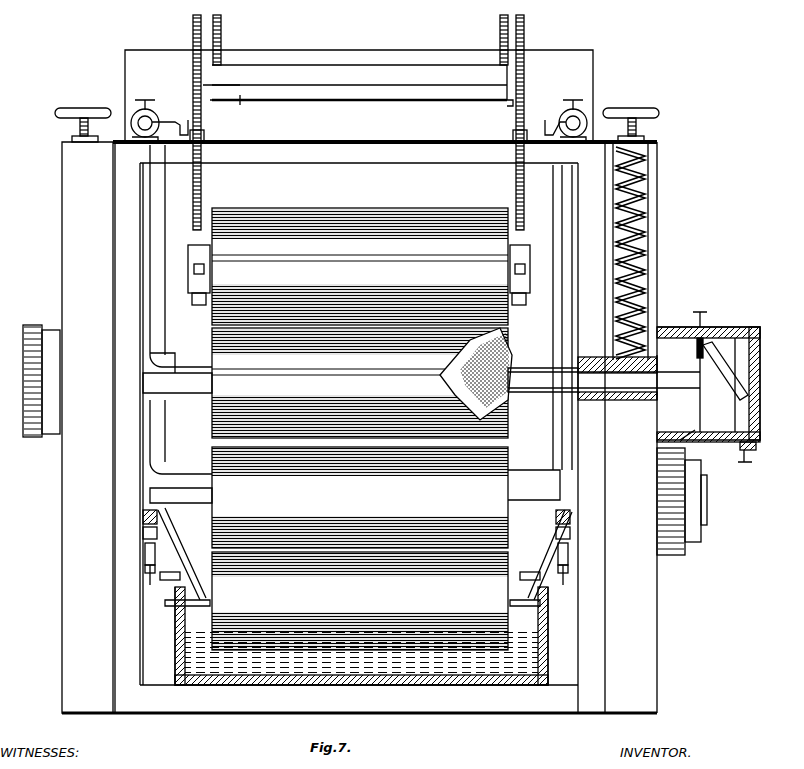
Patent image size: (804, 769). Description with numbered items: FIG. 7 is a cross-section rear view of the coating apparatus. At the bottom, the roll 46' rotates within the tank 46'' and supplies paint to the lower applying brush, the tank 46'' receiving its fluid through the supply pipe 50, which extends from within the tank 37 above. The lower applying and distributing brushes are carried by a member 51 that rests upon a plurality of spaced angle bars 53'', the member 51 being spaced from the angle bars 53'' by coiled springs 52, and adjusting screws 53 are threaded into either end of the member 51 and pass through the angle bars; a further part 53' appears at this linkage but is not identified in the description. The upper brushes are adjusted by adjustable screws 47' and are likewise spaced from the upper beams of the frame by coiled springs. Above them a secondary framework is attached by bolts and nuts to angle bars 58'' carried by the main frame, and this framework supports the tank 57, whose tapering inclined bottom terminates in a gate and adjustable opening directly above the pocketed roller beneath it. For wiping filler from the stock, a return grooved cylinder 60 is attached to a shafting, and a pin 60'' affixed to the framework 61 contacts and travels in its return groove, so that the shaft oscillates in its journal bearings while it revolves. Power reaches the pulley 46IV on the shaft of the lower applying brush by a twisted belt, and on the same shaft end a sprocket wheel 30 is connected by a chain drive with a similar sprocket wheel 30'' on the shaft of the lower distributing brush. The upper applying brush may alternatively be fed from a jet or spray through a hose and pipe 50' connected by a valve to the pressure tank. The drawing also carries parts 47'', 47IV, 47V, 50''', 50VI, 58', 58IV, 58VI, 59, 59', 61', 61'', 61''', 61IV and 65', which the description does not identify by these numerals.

The sprocket wheel 30 is at (712, 547).
The sprocket wheel 30'' is at (556, 332).
The tank 37 is at (405, 50).
The roll 46' is at (360, 548).
The tank 46'' is at (369, 636).
The pulley 46IV is at (680, 565).
The adjustable screw 47' is at (360, 115).
The wheel 47'' is at (41, 371).
The roller 47IV is at (360, 383).
The roller covering 47V is at (512, 395).
The supply pipe 50 is at (360, 369).
The hose and pipe 50' is at (181, 341).
The valve 50''' is at (359, 109).
The shaft pipe 50VI is at (172, 362).
The member 51 is at (590, 512).
The coiled spring 52 is at (590, 533).
The adjusting screw 53 is at (361, 562).
The rod end 53' is at (363, 559).
The angle bar 53'' is at (365, 554).
The tank 57 is at (302, 70).
The slide block 58' is at (359, 275).
The angle bar 58'' is at (360, 242).
The threaded rod 58IV is at (193, 22).
The nut 58VI is at (495, 135).
The pin 59 is at (359, 270).
The block 59' is at (362, 311).
The return grooved cylinder 60 is at (656, 258).
The pin 60'' is at (712, 314).
The framework 61 is at (708, 376).
The lever 61' is at (729, 371).
The bracket arm 61'' is at (677, 426).
The screw 61''' is at (734, 457).
The nut 61IV is at (751, 473).
The pin 65' is at (685, 348).